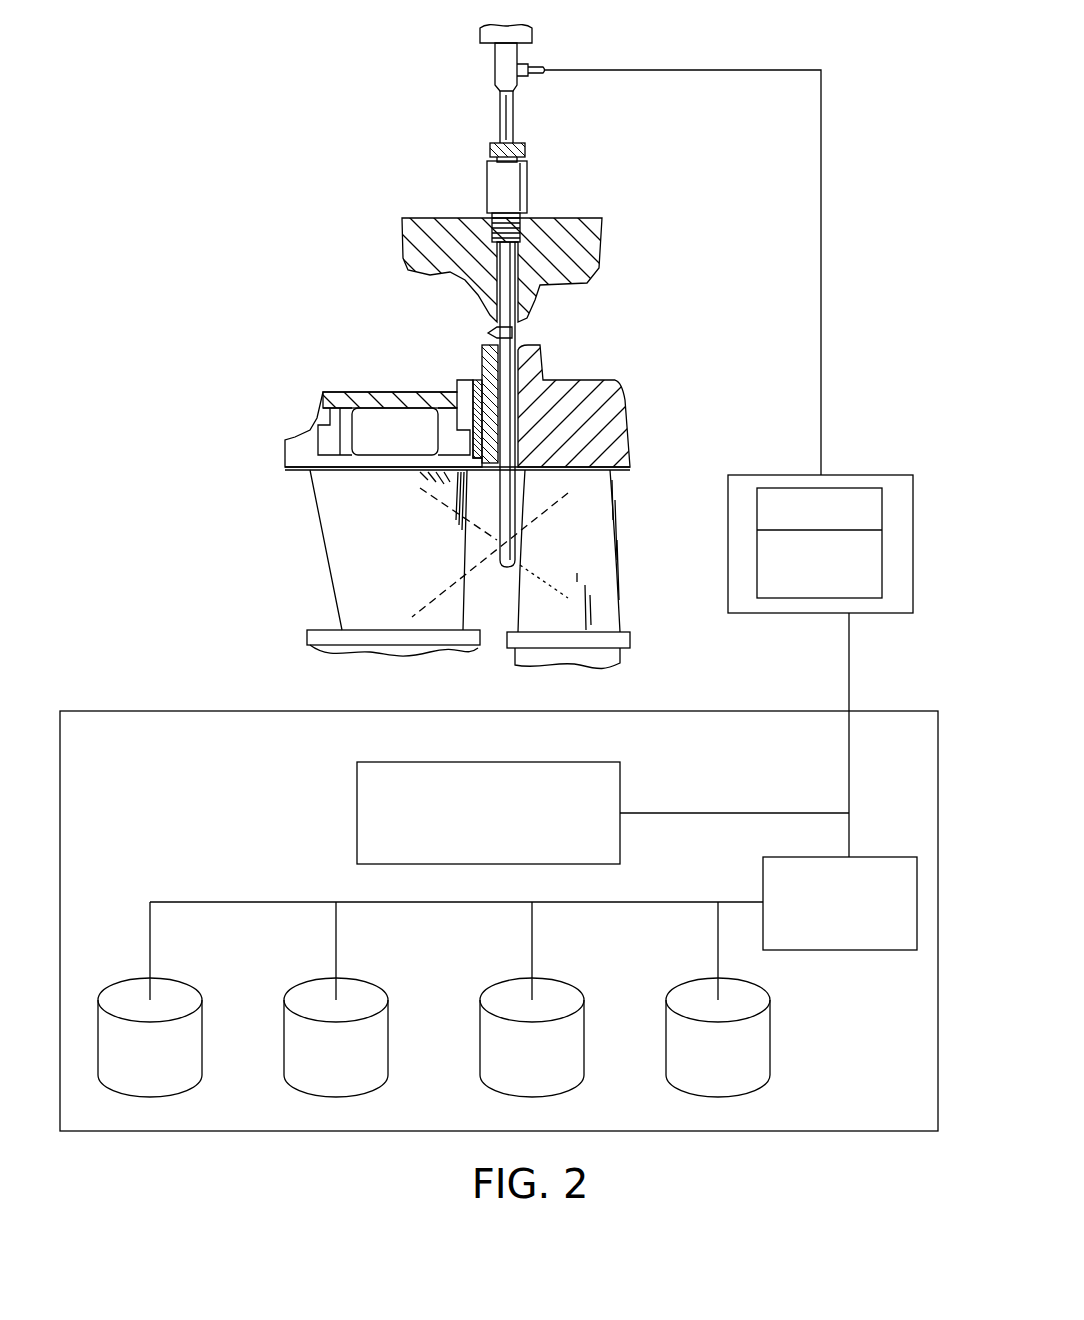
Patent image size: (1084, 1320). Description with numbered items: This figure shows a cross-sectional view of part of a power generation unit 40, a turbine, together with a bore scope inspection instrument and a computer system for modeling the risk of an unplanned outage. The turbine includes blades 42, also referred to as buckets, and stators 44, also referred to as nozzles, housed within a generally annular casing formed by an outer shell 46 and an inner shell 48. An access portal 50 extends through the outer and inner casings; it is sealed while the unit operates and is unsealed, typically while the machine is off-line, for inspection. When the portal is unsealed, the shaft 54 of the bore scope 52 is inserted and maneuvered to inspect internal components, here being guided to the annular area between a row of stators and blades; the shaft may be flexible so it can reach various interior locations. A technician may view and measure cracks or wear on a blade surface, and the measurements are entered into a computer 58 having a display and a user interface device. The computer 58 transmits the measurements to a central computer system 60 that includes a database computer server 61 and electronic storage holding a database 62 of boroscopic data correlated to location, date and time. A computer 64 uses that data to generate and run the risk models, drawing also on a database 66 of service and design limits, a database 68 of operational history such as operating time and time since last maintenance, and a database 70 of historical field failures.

The power generation unit 40 is at (232, 592).
The blades 42 is at (586, 551).
The stators 44 is at (385, 518).
The outer shell 46 is at (600, 266).
The inner shell 48 is at (632, 433).
The access portal 50 is at (497, 258).
The bore scope 52 is at (495, 69).
The shaft 54 is at (497, 512).
The computer 58 is at (765, 614).
The central computer system 60 is at (108, 1132).
The database computer server 61 is at (838, 951).
The database 62 is at (137, 1064).
The computer 64 is at (365, 762).
The database 66 is at (323, 1064).
The database 68 is at (519, 1064).
The database 70 is at (705, 1066).